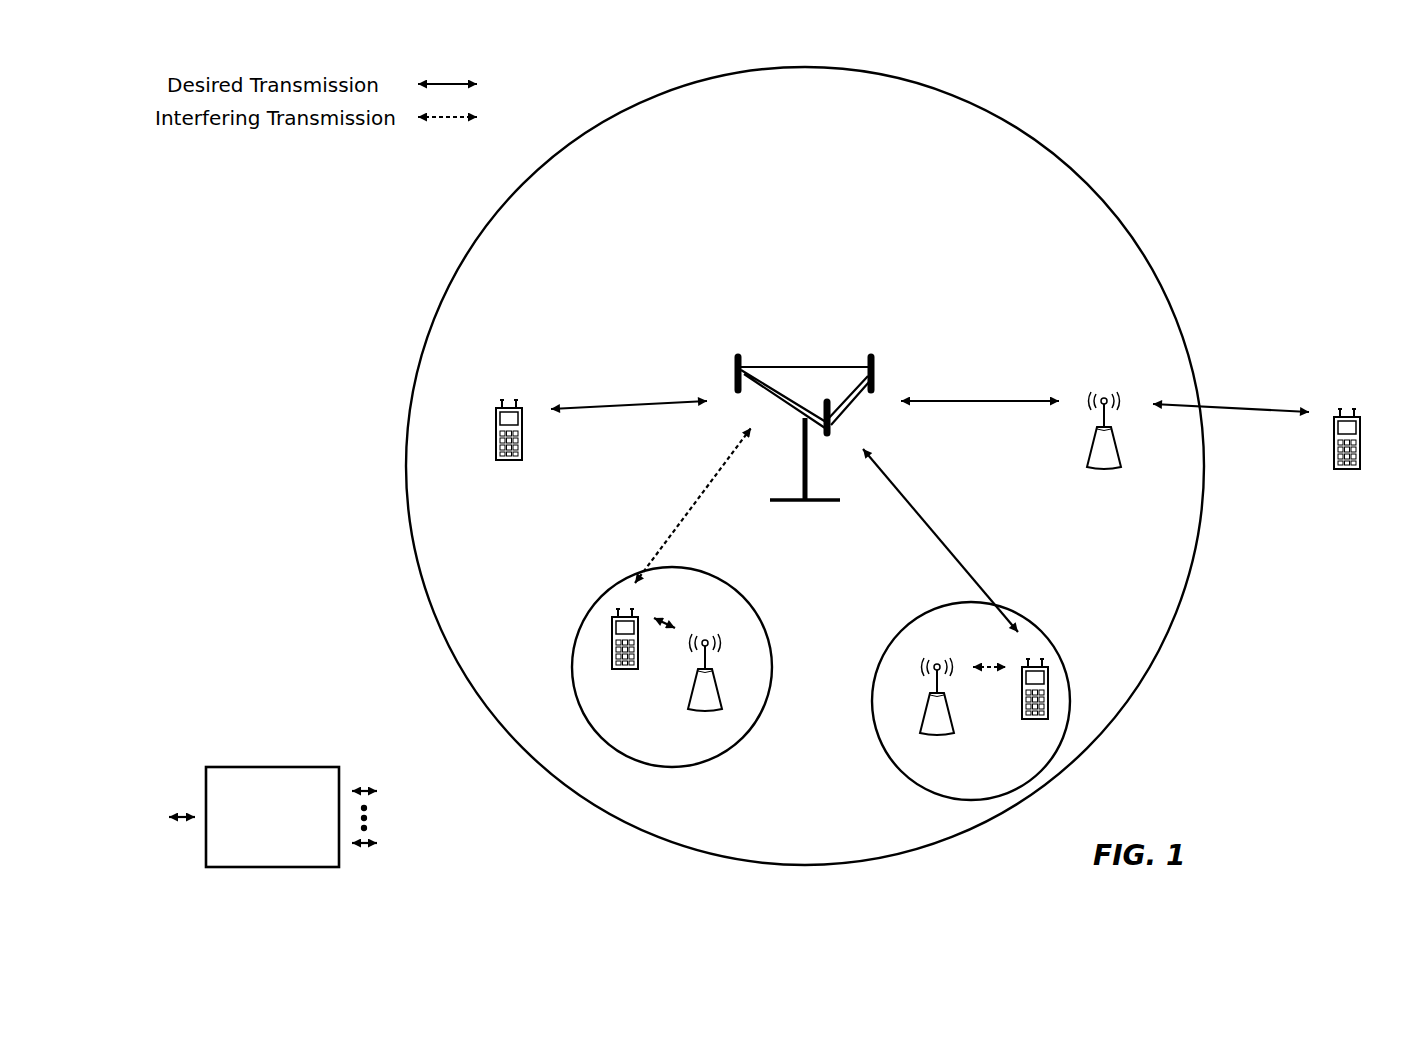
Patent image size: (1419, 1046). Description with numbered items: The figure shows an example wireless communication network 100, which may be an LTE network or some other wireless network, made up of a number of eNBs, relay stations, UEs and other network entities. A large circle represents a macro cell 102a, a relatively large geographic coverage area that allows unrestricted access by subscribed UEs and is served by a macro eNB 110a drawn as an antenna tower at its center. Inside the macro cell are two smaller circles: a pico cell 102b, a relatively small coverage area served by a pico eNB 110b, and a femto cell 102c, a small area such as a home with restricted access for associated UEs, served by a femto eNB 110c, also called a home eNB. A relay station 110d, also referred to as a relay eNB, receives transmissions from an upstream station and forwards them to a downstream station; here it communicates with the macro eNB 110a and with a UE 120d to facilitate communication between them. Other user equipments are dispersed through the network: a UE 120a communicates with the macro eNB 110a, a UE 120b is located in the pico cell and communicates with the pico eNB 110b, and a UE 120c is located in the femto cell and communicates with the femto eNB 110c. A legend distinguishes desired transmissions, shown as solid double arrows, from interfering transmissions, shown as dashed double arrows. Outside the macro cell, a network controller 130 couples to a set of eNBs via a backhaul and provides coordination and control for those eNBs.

The wireless communication network 100 is at (1280, 128).
The macro cell 102a is at (1082, 152).
The pico cell 102b is at (746, 598).
The femto cell 102c is at (892, 634).
The macro eNB 110a is at (800, 366).
The pico eNB 110b is at (720, 692).
The femto eNB 110c is at (920, 720).
The relay station 110d is at (1105, 398).
The UE 120a is at (497, 420).
The UE 120b is at (610, 657).
The UE 120c is at (1020, 710).
The UE 120d is at (1362, 426).
The network controller 130 is at (270, 766).